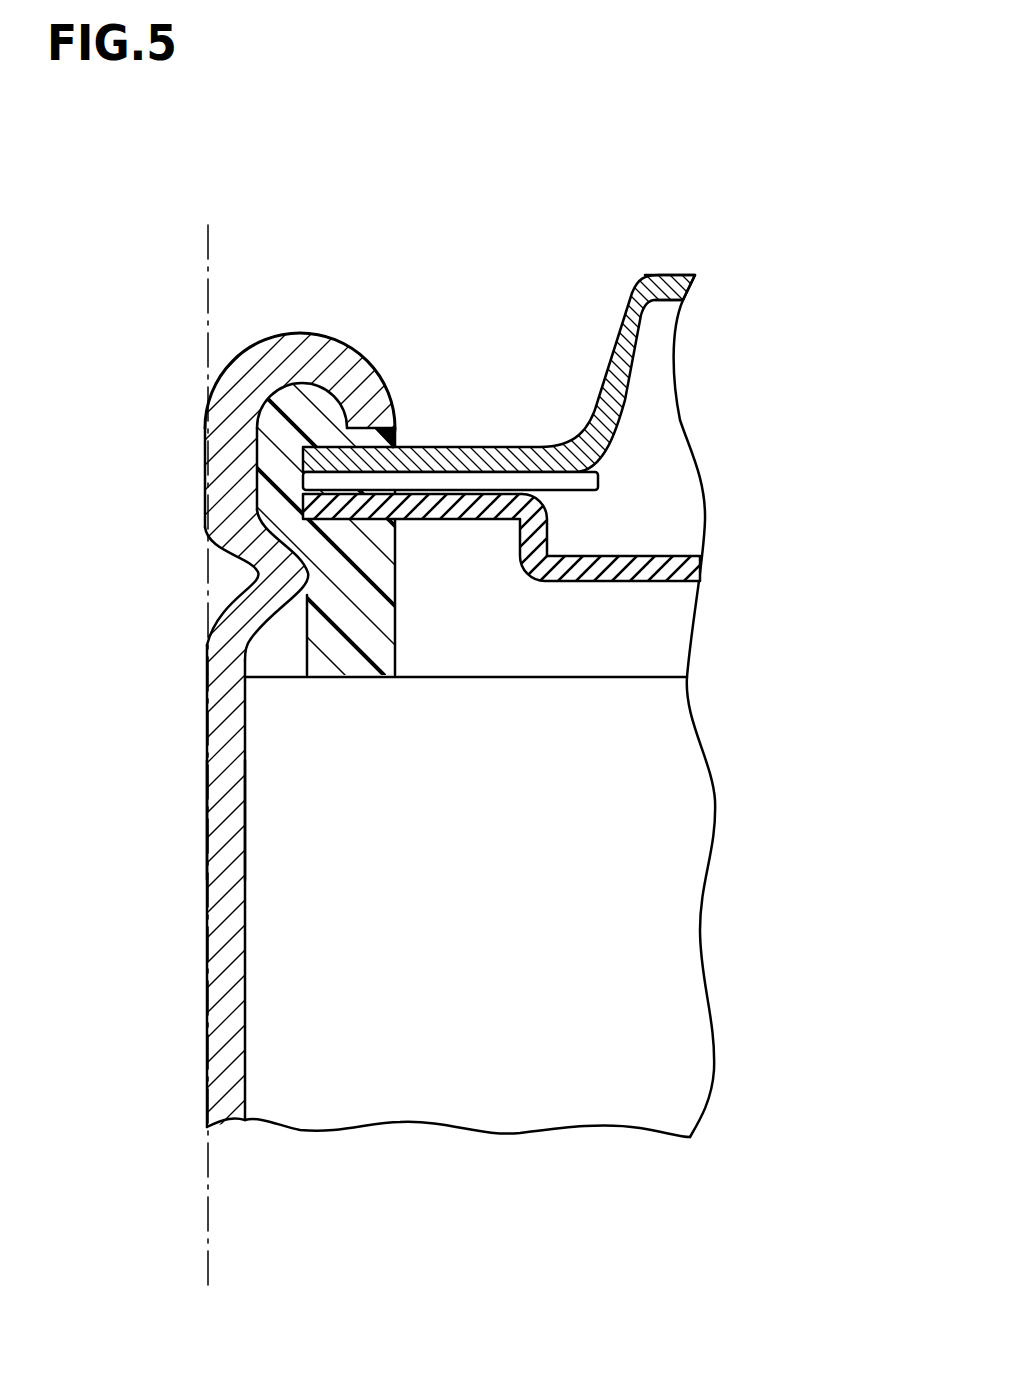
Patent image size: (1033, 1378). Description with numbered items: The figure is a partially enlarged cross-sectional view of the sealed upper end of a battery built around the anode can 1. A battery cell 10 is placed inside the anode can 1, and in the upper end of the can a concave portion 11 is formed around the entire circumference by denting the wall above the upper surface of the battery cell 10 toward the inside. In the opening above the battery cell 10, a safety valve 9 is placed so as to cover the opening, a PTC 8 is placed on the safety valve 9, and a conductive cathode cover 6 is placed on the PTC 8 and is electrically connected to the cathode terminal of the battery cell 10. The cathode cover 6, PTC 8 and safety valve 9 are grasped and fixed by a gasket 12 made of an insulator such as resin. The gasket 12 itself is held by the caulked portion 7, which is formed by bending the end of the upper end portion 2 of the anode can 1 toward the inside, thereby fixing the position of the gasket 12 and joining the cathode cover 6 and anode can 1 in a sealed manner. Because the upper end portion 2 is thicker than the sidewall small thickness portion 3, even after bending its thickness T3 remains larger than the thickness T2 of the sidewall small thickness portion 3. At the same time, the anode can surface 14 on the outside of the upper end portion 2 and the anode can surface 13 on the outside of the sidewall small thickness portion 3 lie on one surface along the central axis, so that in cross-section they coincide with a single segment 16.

The anode can 1 is at (516, 635).
The upper end portion 2 is at (250, 375).
The sidewall small thickness portion 3 is at (183, 886).
The cathode cover 6 is at (666, 277).
The caulked portion 7 is at (498, 310).
The PTC 8 is at (600, 480).
The safety valve 9 is at (683, 566).
The battery cell 10 is at (635, 928).
The concave portion 11 is at (258, 572).
The gasket 12 is at (303, 405).
The anode can surface 13 is at (207, 822).
The anode can surface 14 is at (207, 481).
The segment 16 is at (206, 1185).
The thickness of sidewall small thickness portion T2 is at (278, 1031).
The thickness of upper end portion after bending T3 is at (287, 442).